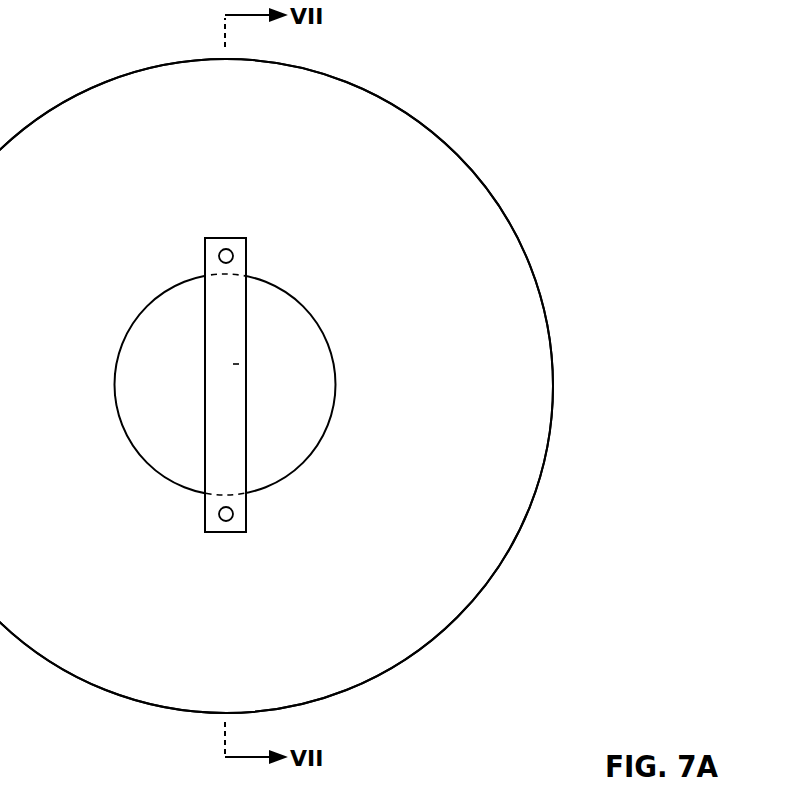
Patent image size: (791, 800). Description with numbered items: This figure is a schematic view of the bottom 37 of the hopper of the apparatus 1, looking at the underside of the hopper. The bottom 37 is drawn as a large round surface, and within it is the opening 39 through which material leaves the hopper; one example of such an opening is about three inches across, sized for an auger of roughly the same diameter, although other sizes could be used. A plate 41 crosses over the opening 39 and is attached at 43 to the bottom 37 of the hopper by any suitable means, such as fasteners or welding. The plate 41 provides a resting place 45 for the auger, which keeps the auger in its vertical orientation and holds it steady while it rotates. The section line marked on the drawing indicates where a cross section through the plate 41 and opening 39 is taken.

The glazing assembly 1 is at (485, 108).
The bottom of the hopper 37 is at (452, 314).
The opening 39 is at (327, 393).
The plate 41 is at (217, 472).
The attachment point 43 is at (226, 521).
The resting place 45 is at (241, 364).